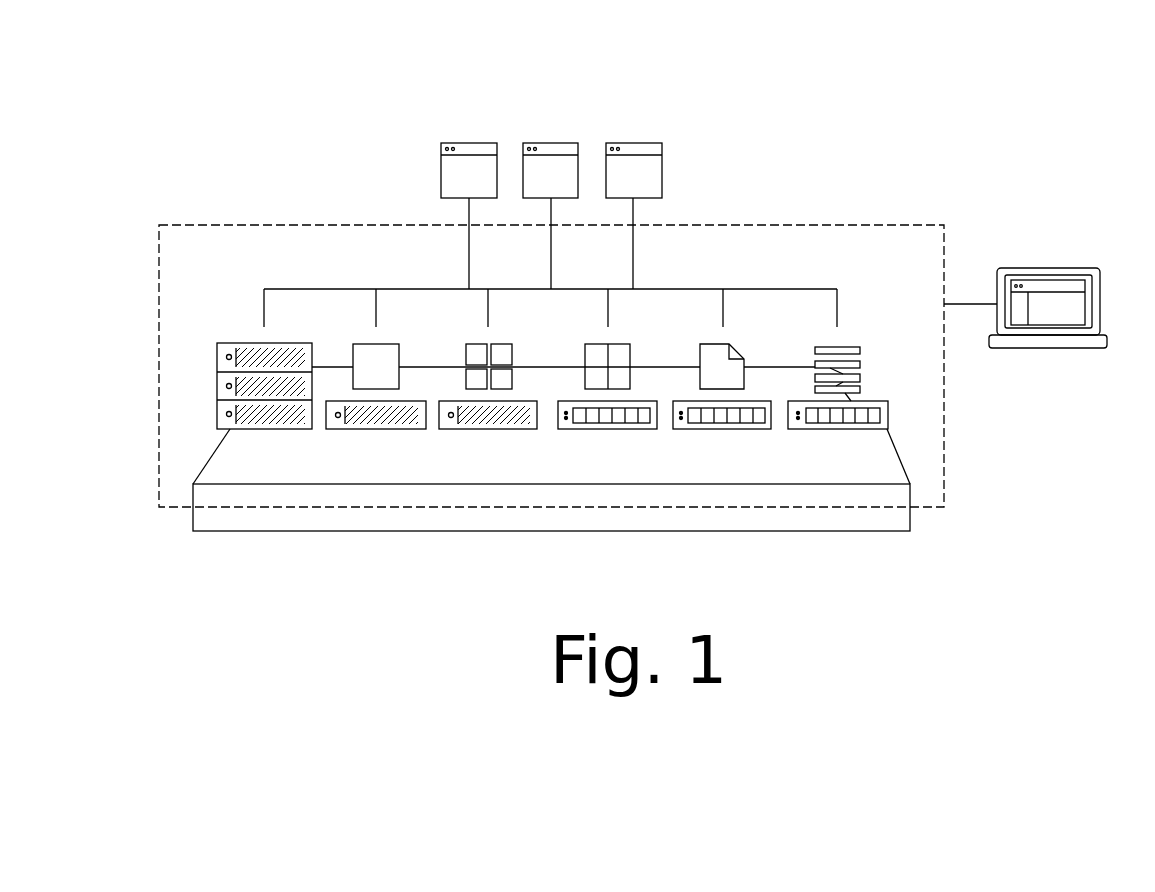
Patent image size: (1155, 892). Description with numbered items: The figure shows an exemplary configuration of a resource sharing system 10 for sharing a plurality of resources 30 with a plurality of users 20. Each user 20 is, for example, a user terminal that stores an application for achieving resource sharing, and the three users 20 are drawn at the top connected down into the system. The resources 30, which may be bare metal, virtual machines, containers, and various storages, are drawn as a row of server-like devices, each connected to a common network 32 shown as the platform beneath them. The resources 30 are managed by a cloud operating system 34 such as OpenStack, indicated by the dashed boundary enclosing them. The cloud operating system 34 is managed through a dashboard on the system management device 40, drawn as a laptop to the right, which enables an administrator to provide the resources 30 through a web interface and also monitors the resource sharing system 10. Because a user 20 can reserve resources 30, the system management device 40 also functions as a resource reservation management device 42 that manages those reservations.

The resource sharing system 10 is at (904, 101).
The user 20 is at (469, 143).
The resource 30 is at (265, 429).
The common network 32 is at (552, 532).
The cloud operating system 34 is at (159, 340).
The system management device 40 is at (1059, 297).
The resource reservation management device 42 is at (1052, 270).